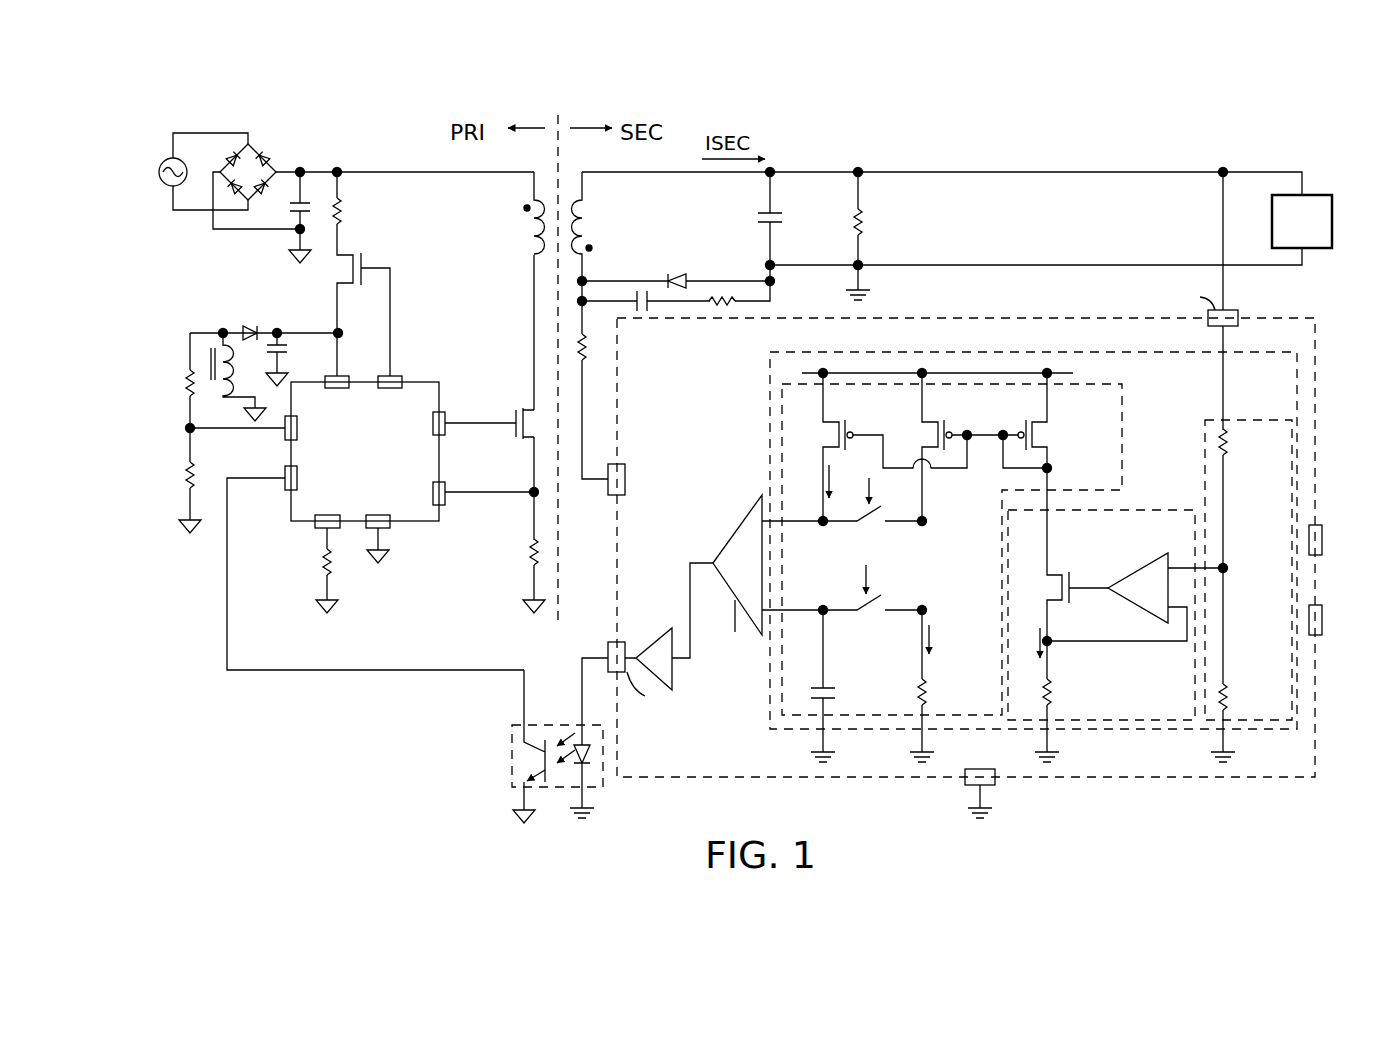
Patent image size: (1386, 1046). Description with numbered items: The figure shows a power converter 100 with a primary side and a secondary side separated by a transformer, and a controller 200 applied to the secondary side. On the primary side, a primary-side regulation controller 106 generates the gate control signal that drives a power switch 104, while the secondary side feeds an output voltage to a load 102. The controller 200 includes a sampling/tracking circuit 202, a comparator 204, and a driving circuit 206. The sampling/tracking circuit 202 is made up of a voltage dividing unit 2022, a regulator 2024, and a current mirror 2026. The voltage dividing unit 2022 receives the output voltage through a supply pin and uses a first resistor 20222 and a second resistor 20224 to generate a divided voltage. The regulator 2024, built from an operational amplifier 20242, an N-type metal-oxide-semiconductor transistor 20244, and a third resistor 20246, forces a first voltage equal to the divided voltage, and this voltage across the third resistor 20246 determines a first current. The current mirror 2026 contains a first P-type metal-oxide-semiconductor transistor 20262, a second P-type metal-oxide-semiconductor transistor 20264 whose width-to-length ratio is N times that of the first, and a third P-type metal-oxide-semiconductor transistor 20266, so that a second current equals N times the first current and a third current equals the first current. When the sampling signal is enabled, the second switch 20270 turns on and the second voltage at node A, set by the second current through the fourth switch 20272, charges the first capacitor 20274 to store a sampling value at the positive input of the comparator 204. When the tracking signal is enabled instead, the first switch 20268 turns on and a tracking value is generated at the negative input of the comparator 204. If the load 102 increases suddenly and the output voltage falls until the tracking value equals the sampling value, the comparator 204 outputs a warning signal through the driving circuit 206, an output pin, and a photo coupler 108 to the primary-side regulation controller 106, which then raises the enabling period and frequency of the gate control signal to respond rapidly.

The power converter 100 is at (1203, 124).
The load 102 is at (1333, 215).
The power switch 104 is at (535, 420).
The primary-side regulation controller 106 is at (415, 527).
The photo coupler 108 is at (512, 757).
The controller 200 is at (1316, 325).
The sampling/tracking circuit 202 is at (770, 430).
The comparator 204 is at (738, 535).
The driving circuit 206 is at (666, 632).
The voltage dividing unit 2022 is at (1257, 418).
The regulator 2024 is at (1168, 508).
The current mirror 2026 is at (1150, 424).
The first resistor 20222 is at (1230, 448).
The second resistor 20224 is at (1232, 692).
The operational amplifier 20242 is at (1148, 557).
The N-type metal-oxide-semiconductor transistor 20244 is at (1060, 575).
The third resistor 20246 is at (1054, 696).
The first P-type metal-oxide-semiconductor transistor 20262 is at (1045, 437).
The second P-type metal-oxide-semiconductor transistor 20264 is at (930, 425).
The third P-type metal-oxide-semiconductor transistor 20266 is at (832, 425).
The first switch 20268 is at (870, 527).
The second switch 20270 is at (868, 616).
The fourth switch 20272 is at (928, 698).
The first capacitor 20274 is at (830, 697).